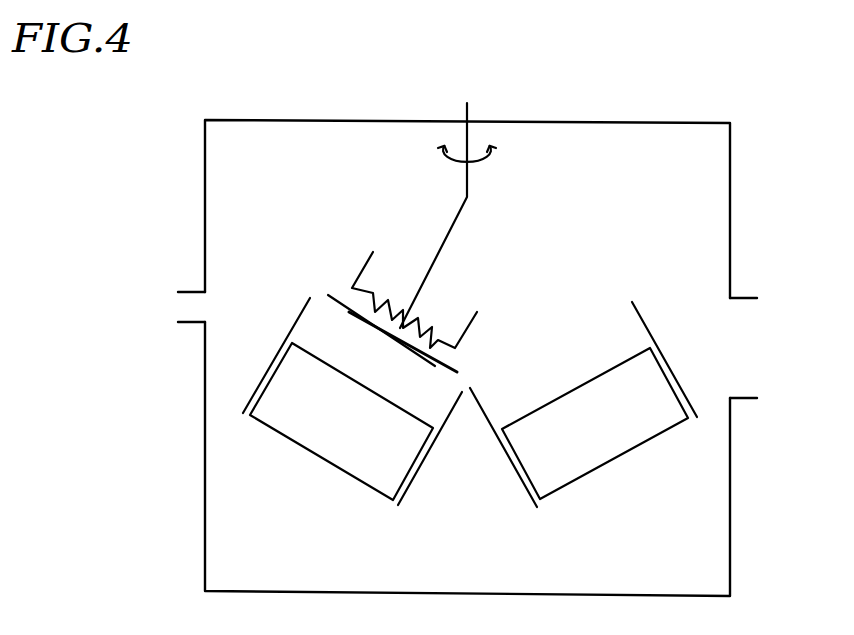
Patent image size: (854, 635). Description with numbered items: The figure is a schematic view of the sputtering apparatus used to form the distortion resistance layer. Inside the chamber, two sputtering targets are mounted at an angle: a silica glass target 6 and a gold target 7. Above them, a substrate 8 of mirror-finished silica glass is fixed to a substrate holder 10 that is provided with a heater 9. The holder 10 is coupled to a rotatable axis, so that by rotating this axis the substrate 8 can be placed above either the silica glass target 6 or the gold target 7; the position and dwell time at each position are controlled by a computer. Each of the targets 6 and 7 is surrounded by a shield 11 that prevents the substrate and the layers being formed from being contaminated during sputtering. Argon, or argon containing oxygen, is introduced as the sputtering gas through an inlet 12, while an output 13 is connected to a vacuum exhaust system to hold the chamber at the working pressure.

The silica glass target 6 is at (363, 462).
The gold target 7 is at (593, 448).
The substrate 8 is at (373, 330).
The heater 9 is at (398, 330).
The substrate holder 10 is at (457, 372).
The shield 11 is at (644, 329).
The inlet 12 is at (187, 307).
The output 13 is at (738, 363).